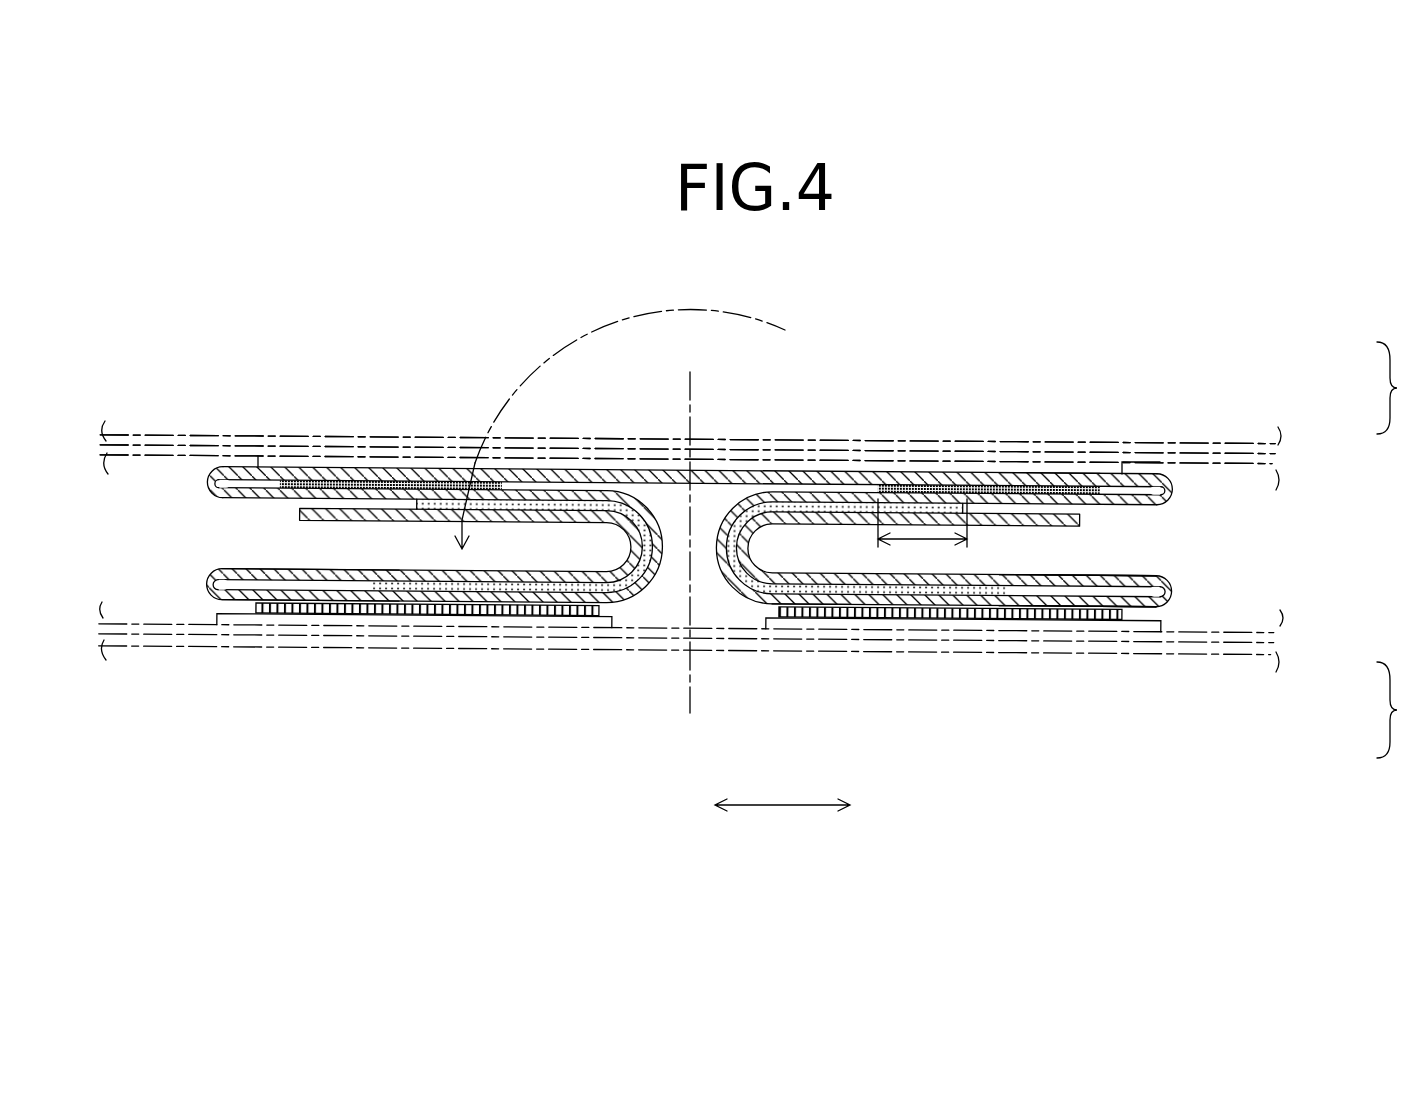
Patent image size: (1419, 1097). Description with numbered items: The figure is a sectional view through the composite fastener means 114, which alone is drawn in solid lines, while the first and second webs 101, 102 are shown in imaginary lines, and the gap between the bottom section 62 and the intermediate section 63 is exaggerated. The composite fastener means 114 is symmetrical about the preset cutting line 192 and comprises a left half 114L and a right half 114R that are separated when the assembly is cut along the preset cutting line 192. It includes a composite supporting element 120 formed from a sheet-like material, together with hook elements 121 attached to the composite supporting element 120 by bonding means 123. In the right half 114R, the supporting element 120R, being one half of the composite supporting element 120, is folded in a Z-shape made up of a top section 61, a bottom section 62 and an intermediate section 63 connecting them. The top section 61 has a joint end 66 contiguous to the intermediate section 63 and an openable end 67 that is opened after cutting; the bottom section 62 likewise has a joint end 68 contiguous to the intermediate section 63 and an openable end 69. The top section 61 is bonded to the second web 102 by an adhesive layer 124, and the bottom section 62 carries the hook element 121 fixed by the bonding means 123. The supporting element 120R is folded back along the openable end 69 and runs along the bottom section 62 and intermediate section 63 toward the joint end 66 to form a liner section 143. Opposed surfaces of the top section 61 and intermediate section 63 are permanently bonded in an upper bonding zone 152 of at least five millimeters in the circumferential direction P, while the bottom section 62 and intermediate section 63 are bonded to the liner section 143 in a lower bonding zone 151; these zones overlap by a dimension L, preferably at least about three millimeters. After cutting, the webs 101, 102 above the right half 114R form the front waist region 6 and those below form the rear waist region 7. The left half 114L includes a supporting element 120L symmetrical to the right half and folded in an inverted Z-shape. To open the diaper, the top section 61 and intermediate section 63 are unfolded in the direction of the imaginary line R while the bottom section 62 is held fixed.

The front waist region 6 is at (1397, 388).
The rear waist region 7 is at (1397, 710).
The top section 61 is at (908, 485).
The bottom section 62 is at (1078, 606).
The intermediate section 63 is at (790, 488).
The joint end 66 is at (1178, 489).
The openable end 67 is at (716, 468).
The joint end 68 is at (753, 605).
The openable end 69 is at (1168, 608).
The first web 101 is at (1213, 445).
The second web 102 is at (1237, 455).
The composite fastener means 114 is at (388, 377).
The left half 114L is at (268, 428).
The right half 114R is at (1121, 419).
The composite supporting element 120 is at (207, 478).
The supporting element 120L is at (258, 571).
The supporting element 120R is at (1174, 608).
The hook element 121 is at (362, 615).
The bonding means 123 is at (466, 605).
The adhesive layer 124 is at (1050, 473).
The liner section 143 is at (1030, 582).
The lower bonding zone 151 is at (843, 582).
The upper bonding zone 152 is at (963, 487).
The preset cutting line 192 is at (692, 705).
The imaginary line R is at (623, 317).
The dimension L is at (930, 541).
The circumferential direction P is at (802, 806).